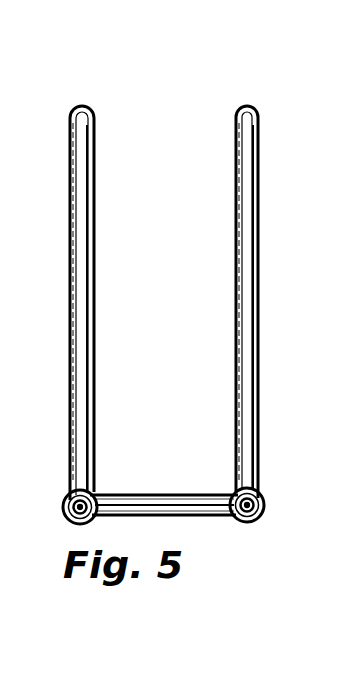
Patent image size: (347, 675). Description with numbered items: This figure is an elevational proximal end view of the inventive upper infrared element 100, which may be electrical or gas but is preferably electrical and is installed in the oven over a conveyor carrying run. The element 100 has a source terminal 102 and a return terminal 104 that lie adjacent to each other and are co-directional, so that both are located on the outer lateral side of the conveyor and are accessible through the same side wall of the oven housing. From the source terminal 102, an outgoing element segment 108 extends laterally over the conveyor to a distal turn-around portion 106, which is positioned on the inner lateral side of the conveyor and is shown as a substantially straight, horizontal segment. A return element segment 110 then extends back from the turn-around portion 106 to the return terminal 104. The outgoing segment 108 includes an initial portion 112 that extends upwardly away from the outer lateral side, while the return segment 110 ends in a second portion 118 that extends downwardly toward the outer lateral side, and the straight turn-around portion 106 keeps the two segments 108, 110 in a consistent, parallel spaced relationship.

The upper infrared element 100 is at (148, 98).
The source terminal 102 is at (93, 490).
The return terminal 104 is at (257, 520).
The distal turn-around portion 106 is at (162, 513).
The outgoing element segment 108 is at (90, 195).
The return element segment 110 is at (254, 184).
The initial portion 112 is at (88, 345).
The second portion 118 is at (246, 310).